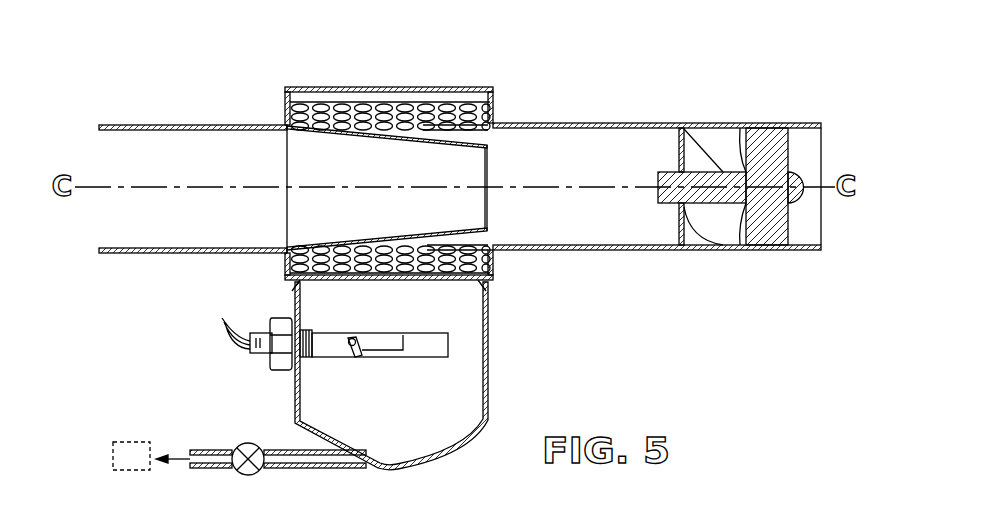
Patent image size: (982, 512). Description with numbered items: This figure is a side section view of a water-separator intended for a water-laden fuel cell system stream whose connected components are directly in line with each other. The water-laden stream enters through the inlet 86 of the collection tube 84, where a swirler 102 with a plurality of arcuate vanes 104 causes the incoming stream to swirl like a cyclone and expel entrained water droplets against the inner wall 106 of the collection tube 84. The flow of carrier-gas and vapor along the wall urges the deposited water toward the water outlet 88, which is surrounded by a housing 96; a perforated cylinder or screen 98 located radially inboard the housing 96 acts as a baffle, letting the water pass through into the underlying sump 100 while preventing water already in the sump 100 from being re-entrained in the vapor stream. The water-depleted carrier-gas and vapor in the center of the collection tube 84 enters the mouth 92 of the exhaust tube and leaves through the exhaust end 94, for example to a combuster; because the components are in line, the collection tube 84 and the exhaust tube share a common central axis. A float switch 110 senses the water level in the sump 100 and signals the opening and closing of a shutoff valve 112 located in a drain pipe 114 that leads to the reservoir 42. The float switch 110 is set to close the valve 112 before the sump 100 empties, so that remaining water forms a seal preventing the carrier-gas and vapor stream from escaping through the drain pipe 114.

The reservoir 42 is at (151, 456).
The collection tube 84 is at (558, 123).
The water-laden stream inlet 86 is at (808, 137).
The water outlet 88 is at (416, 128).
The mouth 92 is at (490, 145).
The exhaust end 94 is at (100, 127).
The housing 96 is at (368, 88).
The perforated cylinder or screen 98 is at (331, 108).
The sump 100 is at (485, 322).
The swirler 102 is at (777, 158).
The arcuate vanes 104 is at (702, 155).
The inner wall 106 is at (578, 130).
The float switch 110 is at (330, 350).
The shutoff valve 112 is at (239, 446).
The drain pipe 114 is at (282, 450).